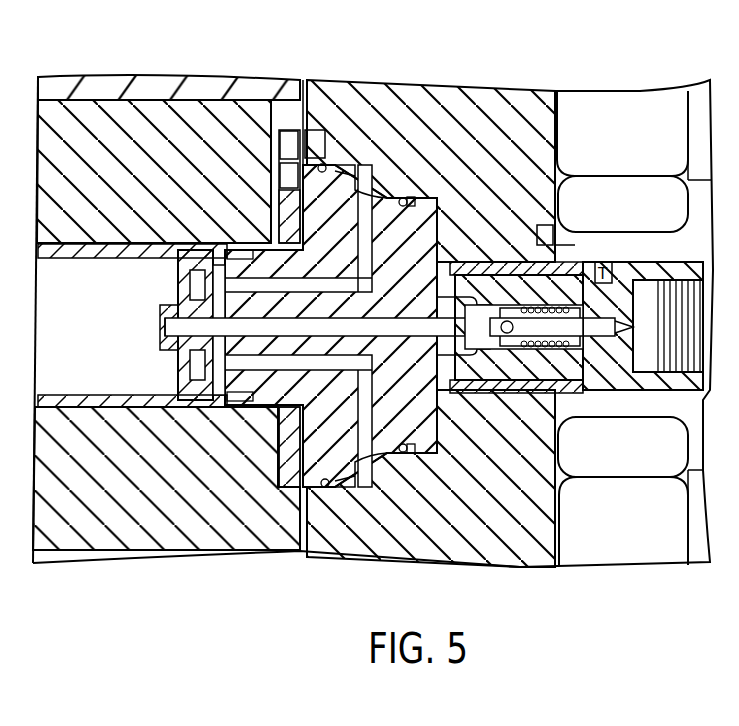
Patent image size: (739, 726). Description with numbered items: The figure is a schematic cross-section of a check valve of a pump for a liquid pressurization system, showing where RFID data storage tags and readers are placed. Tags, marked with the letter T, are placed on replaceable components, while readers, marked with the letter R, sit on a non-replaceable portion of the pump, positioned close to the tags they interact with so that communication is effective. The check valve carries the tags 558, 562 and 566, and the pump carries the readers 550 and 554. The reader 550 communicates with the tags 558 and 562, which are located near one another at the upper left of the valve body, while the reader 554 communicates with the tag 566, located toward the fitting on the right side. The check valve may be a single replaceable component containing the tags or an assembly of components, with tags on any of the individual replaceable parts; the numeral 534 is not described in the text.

The valve housing 534 is at (547, 224).
The reader 550 is at (326, 110).
The reader 554 is at (410, 208).
The tag 558 is at (300, 128).
The tag 562 is at (256, 110).
The tag 566 is at (624, 270).